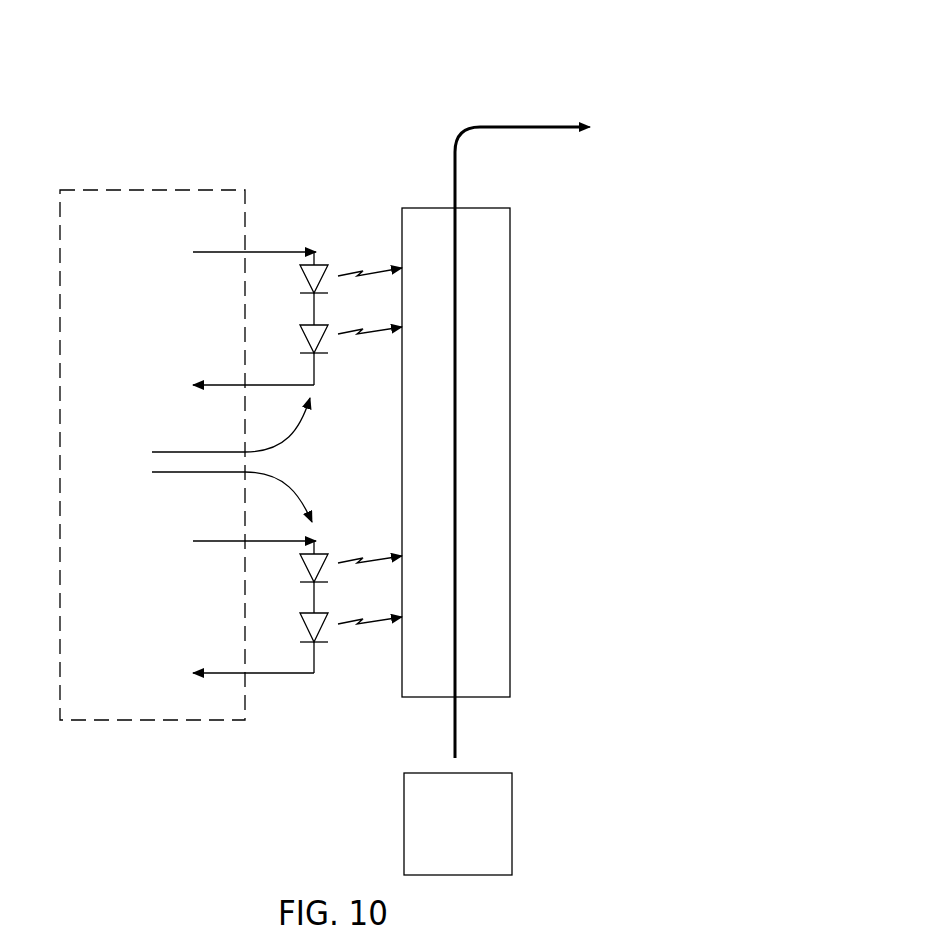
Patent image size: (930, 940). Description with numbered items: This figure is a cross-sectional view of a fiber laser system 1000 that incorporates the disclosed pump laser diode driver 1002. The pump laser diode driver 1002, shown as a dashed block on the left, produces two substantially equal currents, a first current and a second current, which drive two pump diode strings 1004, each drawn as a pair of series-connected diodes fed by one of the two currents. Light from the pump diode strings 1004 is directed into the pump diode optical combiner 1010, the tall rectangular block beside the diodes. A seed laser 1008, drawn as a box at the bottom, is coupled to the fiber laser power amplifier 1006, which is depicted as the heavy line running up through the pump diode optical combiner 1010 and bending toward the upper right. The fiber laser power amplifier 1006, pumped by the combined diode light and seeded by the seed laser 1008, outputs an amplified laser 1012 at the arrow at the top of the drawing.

The system 1000 is at (92, 37).
The pump laser diode driver 1002 is at (152, 189).
The pump diode strings 1004 is at (162, 451).
The fiber laser power amplifier 1006 is at (458, 174).
The seed laser 1008 is at (513, 823).
The pump diode optical combiner 1010 is at (512, 420).
The amplified laser 1012 is at (580, 124).